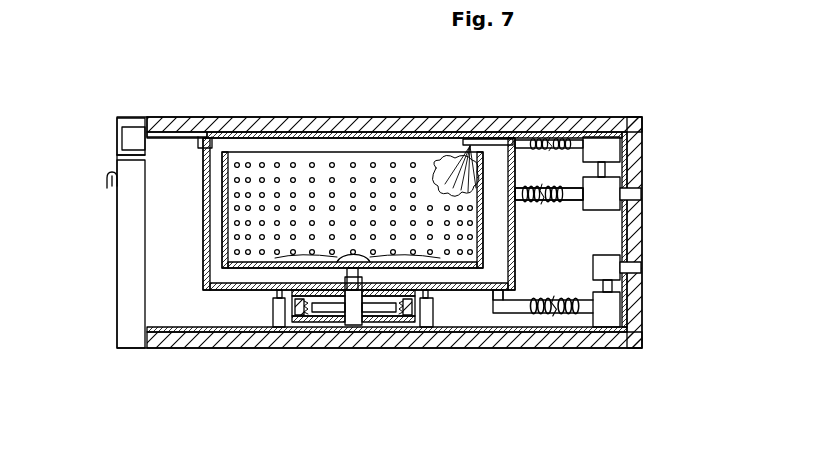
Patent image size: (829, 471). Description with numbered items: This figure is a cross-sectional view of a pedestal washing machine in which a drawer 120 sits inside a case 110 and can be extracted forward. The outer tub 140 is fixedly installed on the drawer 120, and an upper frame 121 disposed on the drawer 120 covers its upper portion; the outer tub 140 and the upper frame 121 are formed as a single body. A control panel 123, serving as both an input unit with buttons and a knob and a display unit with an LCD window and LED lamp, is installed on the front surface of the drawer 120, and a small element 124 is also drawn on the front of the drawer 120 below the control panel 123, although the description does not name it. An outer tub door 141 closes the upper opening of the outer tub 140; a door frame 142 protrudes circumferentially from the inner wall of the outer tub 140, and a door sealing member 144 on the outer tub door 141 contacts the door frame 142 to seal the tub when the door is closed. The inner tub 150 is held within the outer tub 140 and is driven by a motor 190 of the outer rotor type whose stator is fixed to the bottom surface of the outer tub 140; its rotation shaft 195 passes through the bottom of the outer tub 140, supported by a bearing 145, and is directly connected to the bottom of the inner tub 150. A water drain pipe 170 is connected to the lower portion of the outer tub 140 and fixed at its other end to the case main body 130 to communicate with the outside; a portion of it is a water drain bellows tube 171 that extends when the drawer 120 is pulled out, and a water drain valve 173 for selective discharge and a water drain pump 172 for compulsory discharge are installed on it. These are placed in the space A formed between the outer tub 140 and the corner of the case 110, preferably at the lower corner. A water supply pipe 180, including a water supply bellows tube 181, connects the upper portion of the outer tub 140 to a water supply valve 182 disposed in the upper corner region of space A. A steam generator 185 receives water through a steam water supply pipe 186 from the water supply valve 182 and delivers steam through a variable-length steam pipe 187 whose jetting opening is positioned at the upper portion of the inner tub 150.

The case 110 is at (135, 352).
The drawer 120 is at (125, 281).
The upper frame 121 is at (170, 132).
The control panel 123 is at (117, 139).
The hook 124 is at (111, 183).
The case main body 130 is at (173, 343).
The outer tub 140 is at (229, 292).
The outer tub door 141 is at (370, 130).
The door frame 142 is at (213, 143).
The door sealing member 144 is at (210, 138).
The bearing 145 is at (373, 290).
The inner tub 150 is at (305, 152).
The water drain pipe 170 is at (515, 309).
The water drain bellows tube 171 is at (562, 314).
The water drain pump 172 is at (610, 310).
The water drain valve 173 is at (592, 268).
The water supply pipe 180 is at (577, 190).
The water supply bellows tube 181 is at (550, 201).
The water supply valve 182 is at (600, 209).
The steam generator 185 is at (600, 143).
The steam water supply pipe 186 is at (605, 168).
The steam pipe 187 is at (552, 140).
The motor 190 is at (316, 321).
The rotation shaft 195 is at (353, 322).
The space A is at (530, 262).